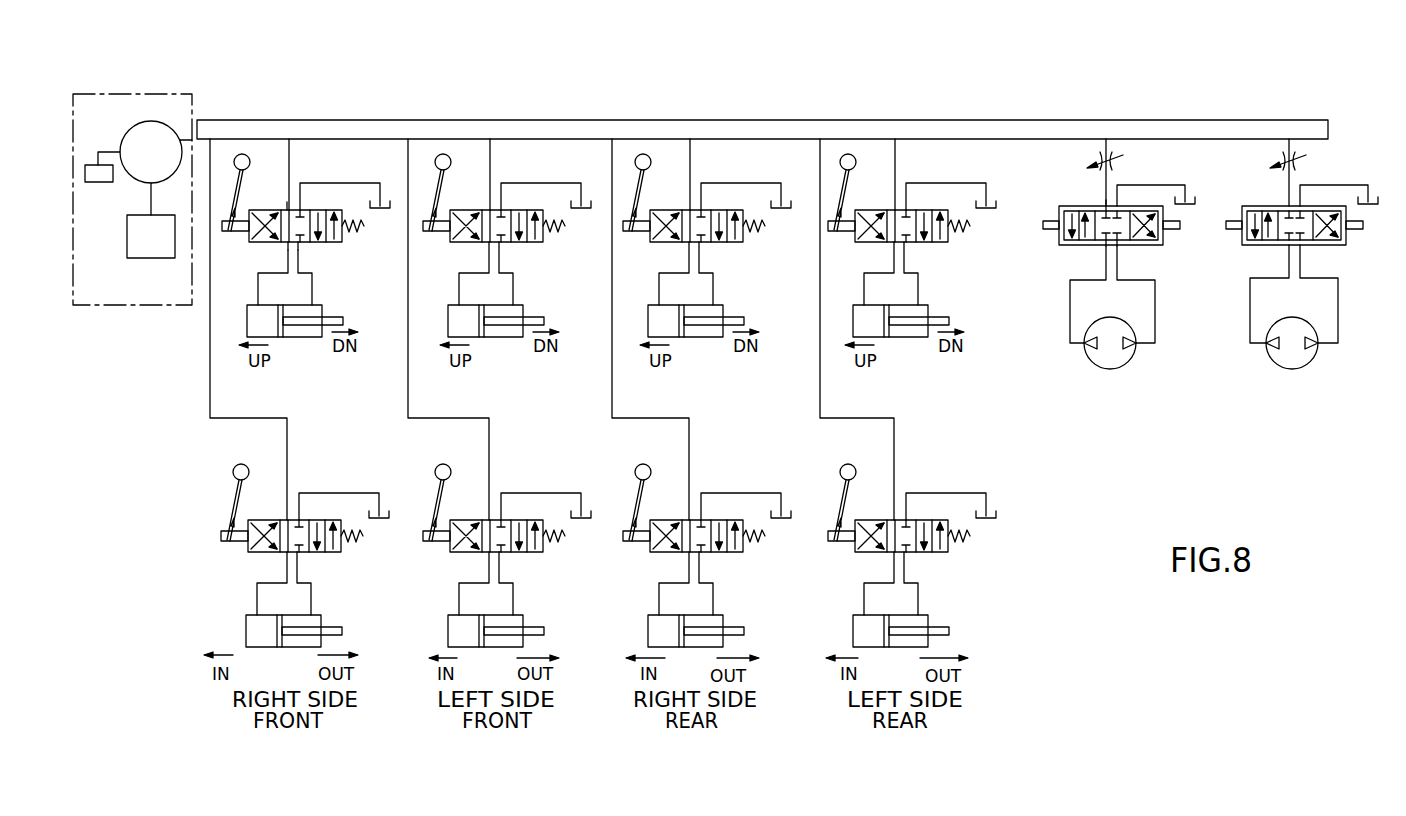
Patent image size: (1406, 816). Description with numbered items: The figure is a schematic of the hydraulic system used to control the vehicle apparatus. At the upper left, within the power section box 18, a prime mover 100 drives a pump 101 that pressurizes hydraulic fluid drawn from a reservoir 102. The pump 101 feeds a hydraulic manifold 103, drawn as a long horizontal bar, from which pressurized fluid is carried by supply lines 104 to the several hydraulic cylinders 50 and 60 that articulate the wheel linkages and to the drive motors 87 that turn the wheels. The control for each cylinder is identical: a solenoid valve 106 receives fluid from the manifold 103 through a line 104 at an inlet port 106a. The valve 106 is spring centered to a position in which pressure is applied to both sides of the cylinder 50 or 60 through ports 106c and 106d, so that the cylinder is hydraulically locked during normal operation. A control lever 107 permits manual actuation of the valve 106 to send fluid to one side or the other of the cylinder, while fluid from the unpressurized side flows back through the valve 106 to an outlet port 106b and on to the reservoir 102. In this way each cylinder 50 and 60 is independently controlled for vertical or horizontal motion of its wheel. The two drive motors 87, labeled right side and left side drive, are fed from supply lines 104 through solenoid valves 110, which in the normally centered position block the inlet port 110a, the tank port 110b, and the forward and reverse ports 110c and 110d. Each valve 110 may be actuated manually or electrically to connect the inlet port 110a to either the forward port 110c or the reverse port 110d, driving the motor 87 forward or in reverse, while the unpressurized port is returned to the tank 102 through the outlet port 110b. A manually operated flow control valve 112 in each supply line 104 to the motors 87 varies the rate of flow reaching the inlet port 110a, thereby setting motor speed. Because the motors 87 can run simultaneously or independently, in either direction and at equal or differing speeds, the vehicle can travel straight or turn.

The power section box 18 is at (145, 296).
The prime mover 100 is at (128, 238).
The pump 101 is at (155, 132).
The reservoir 102 is at (89, 165).
The hydraulic manifold 103 is at (625, 122).
The supply line 104 is at (291, 162).
The solenoid valve 106 is at (305, 185).
The inlet port 106a is at (317, 142).
The outlet port 106b is at (344, 188).
The port 106c is at (252, 256).
The port 106d is at (333, 266).
The control lever 107 is at (248, 152).
The solenoid valve 110 is at (1192, 182).
The inlet port 110a is at (1170, 153).
The tank port 110b is at (1156, 189).
The forward port 110c is at (1071, 253).
The reverse port 110d is at (1145, 253).
The flow control valve 112 is at (1100, 160).
The hydraulic cylinder 50 is at (598, 347).
The hydraulic cylinder 60 is at (597, 646).
The drive motor 87 is at (1190, 335).